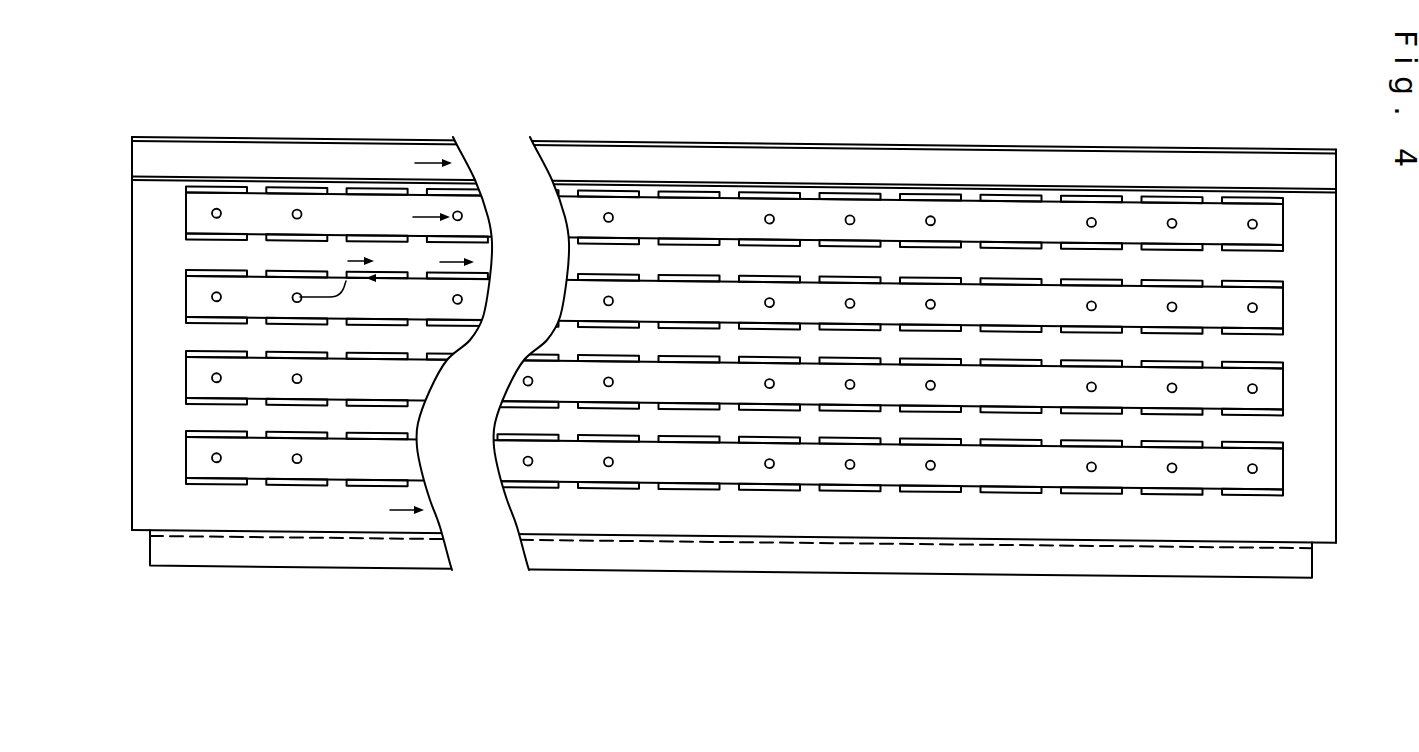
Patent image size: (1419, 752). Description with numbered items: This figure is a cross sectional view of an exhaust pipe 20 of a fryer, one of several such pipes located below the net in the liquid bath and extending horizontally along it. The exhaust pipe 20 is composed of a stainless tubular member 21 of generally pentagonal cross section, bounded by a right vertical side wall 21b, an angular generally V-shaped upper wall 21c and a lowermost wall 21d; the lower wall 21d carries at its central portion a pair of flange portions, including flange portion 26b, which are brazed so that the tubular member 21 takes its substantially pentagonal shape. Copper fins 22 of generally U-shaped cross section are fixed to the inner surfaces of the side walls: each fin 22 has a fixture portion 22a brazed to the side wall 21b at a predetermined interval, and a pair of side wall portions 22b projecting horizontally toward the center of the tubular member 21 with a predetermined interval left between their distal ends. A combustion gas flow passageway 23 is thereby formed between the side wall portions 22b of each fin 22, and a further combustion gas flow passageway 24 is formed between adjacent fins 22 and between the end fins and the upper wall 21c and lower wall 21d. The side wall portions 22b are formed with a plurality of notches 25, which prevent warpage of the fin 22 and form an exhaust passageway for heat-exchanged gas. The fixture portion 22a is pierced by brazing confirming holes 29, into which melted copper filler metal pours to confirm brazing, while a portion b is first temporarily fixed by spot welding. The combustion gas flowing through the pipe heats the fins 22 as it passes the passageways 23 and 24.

The exhaust pipe 20 is at (1016, 120).
The tubular member 21 is at (1254, 584).
The side wall 21b is at (1301, 220).
The upper wall 21c is at (578, 140).
The lower wall 21d is at (826, 540).
The fin 22 is at (1072, 192).
The fixture portion 22a is at (621, 470).
The side wall portion 22b is at (388, 275).
The combustion gas flow passageway 23 is at (255, 203).
The combustion gas flow passageway 24 is at (222, 258).
The notch 25 is at (285, 279).
The flange portion 26b is at (961, 566).
The brazing confirming hole 29 is at (851, 216).
The portion b is at (770, 216).